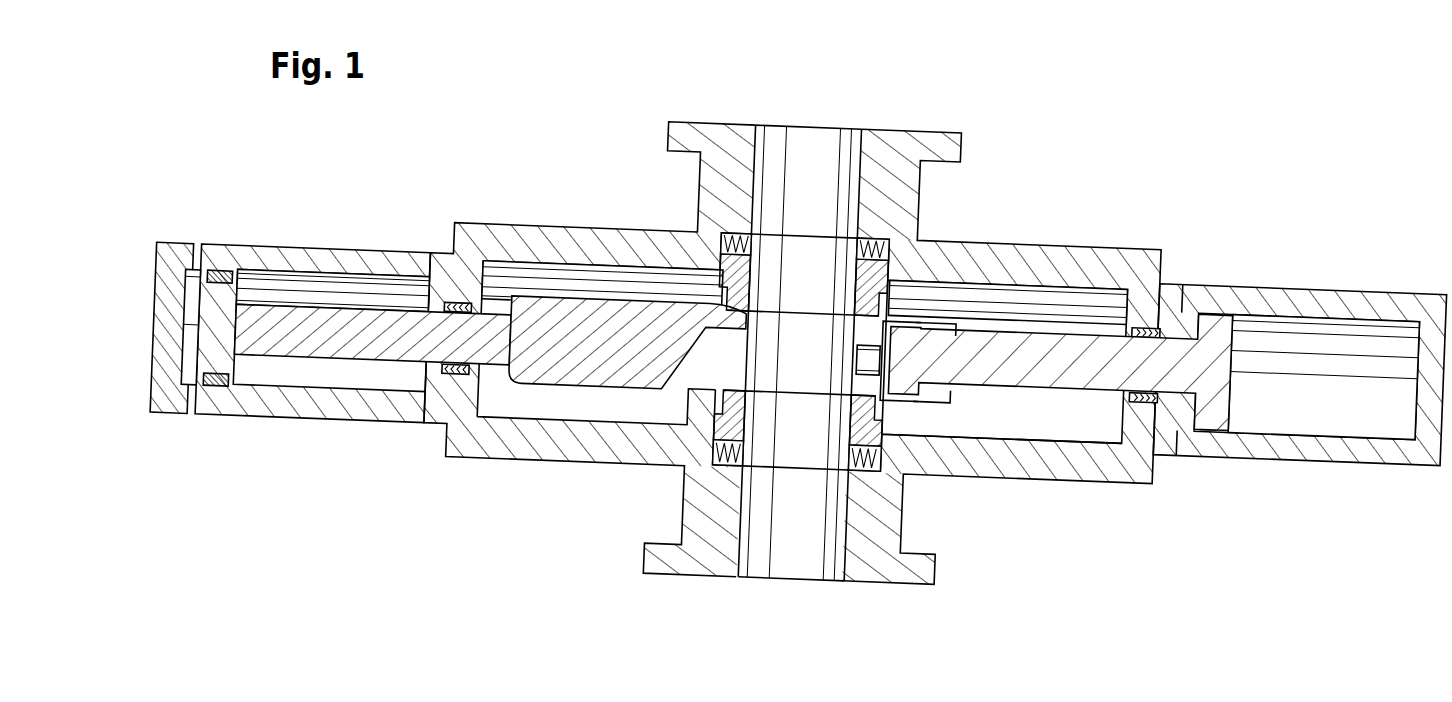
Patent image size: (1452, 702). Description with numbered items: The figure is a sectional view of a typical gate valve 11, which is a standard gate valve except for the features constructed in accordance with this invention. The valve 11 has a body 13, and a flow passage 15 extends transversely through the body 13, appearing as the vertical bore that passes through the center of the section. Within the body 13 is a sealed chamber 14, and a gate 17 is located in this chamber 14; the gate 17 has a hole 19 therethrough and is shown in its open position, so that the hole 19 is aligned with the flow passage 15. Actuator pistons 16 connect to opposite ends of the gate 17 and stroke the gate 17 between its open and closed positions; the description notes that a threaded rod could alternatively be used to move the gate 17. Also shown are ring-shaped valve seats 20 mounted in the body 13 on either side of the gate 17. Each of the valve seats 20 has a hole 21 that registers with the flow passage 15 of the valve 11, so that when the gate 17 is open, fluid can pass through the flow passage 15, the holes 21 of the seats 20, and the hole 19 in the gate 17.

The valve 11 is at (1168, 111).
The body 13 is at (1083, 258).
The sealed chamber 14 is at (1022, 428).
The flow passage 15 is at (770, 150).
The actuator pistons 16 is at (1233, 395).
The gate 17 is at (560, 388).
The hole 19 is at (853, 328).
The valve seats 20 is at (895, 262).
The holes 21 is at (750, 293).